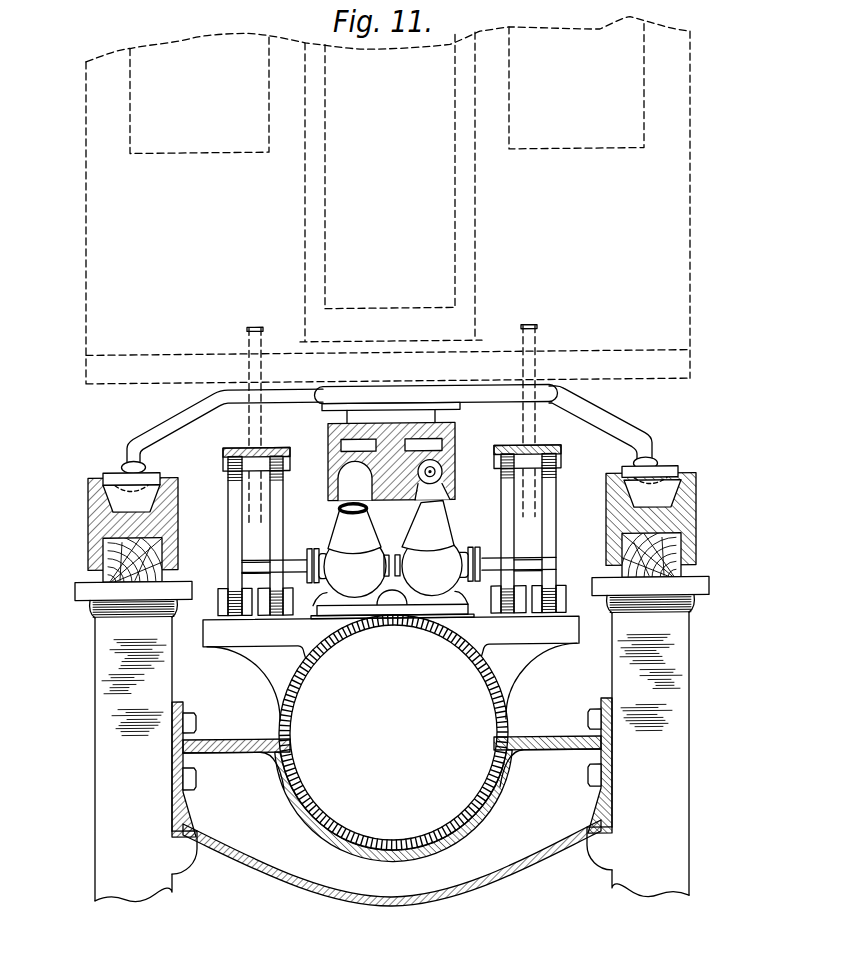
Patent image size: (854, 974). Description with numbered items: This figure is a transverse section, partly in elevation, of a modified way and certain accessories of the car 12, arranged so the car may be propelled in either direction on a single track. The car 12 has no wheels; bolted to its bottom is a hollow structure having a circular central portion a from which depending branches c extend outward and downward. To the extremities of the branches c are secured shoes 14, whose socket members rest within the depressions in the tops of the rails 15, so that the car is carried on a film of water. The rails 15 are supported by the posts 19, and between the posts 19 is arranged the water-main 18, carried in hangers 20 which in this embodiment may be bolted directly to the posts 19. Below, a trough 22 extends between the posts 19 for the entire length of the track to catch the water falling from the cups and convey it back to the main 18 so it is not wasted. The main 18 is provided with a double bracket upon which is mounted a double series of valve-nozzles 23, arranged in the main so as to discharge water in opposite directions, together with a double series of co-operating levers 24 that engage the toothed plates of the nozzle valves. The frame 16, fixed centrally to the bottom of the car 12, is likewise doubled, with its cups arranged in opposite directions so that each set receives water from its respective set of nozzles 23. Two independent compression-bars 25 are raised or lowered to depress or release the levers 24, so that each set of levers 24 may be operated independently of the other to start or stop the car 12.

The car 12 is at (86, 155).
The circular central portion a is at (436, 401).
The depending branches c is at (165, 426).
The shoes 14 is at (104, 476).
The rail 15 is at (88, 503).
The frame 16 is at (455, 448).
The water-main 18 is at (393, 738).
The posts 19 is at (392, 739).
The hangers 20 is at (502, 799).
The trough 22 is at (392, 878).
The valve-nozzles 23 is at (343, 532).
The lever 24 is at (236, 519).
The compression-bar 25 is at (222, 459).